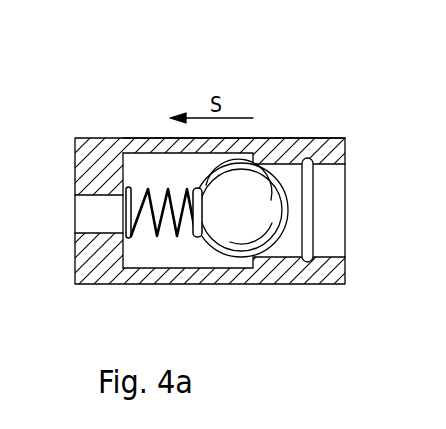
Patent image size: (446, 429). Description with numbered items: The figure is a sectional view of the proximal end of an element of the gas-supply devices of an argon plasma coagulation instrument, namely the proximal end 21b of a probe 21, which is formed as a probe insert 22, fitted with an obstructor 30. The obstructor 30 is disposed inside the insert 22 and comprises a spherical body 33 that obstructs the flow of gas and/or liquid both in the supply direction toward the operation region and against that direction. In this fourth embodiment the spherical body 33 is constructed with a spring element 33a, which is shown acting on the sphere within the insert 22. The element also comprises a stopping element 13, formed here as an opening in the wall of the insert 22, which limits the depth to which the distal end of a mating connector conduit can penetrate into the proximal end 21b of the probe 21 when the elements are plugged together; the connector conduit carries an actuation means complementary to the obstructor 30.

The stopping element 13 is at (306, 262).
The probe 21 is at (77, 292).
The proximal end of the probe 21b is at (131, 138).
The probe insert 22 is at (291, 92).
The obstructor 30 is at (232, 284).
The spherical body 33 is at (253, 223).
The spring element 33a is at (153, 240).